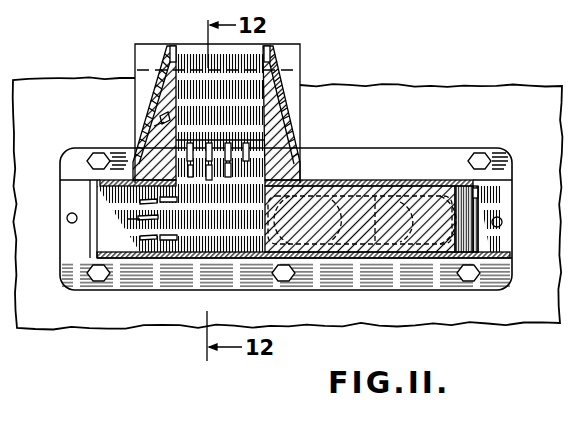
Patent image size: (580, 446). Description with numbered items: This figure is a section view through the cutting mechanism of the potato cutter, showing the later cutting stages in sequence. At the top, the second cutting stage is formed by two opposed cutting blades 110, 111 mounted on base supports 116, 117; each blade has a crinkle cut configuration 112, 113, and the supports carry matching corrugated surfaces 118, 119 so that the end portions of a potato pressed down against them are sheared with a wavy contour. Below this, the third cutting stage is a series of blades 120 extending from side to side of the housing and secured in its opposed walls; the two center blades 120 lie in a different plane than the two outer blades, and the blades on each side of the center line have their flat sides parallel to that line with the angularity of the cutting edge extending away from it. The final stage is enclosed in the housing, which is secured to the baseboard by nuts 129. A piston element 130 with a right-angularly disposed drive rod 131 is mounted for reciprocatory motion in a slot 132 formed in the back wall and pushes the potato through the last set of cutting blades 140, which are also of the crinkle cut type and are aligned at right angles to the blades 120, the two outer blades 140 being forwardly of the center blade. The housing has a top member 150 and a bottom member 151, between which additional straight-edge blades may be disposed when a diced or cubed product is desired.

The cutting blade 110 is at (157, 92).
The cutting blade 111 is at (288, 101).
The crinkle cut configuration 112 is at (179, 24).
The crinkle cut configuration 113 is at (264, 52).
The base support 116 is at (162, 134).
The base support 117 is at (277, 132).
The corrugated surface 118 is at (166, 112).
The corrugated surface 119 is at (266, 105).
The blades 120 is at (210, 165).
The nuts 129 is at (482, 164).
The piston element 130 is at (362, 192).
The drive rod 131 is at (499, 240).
The slot 132 is at (255, 231).
The cutting blades 140 is at (150, 236).
The top member of housing 150 is at (122, 166).
The bottom member of housing 151 is at (134, 258).